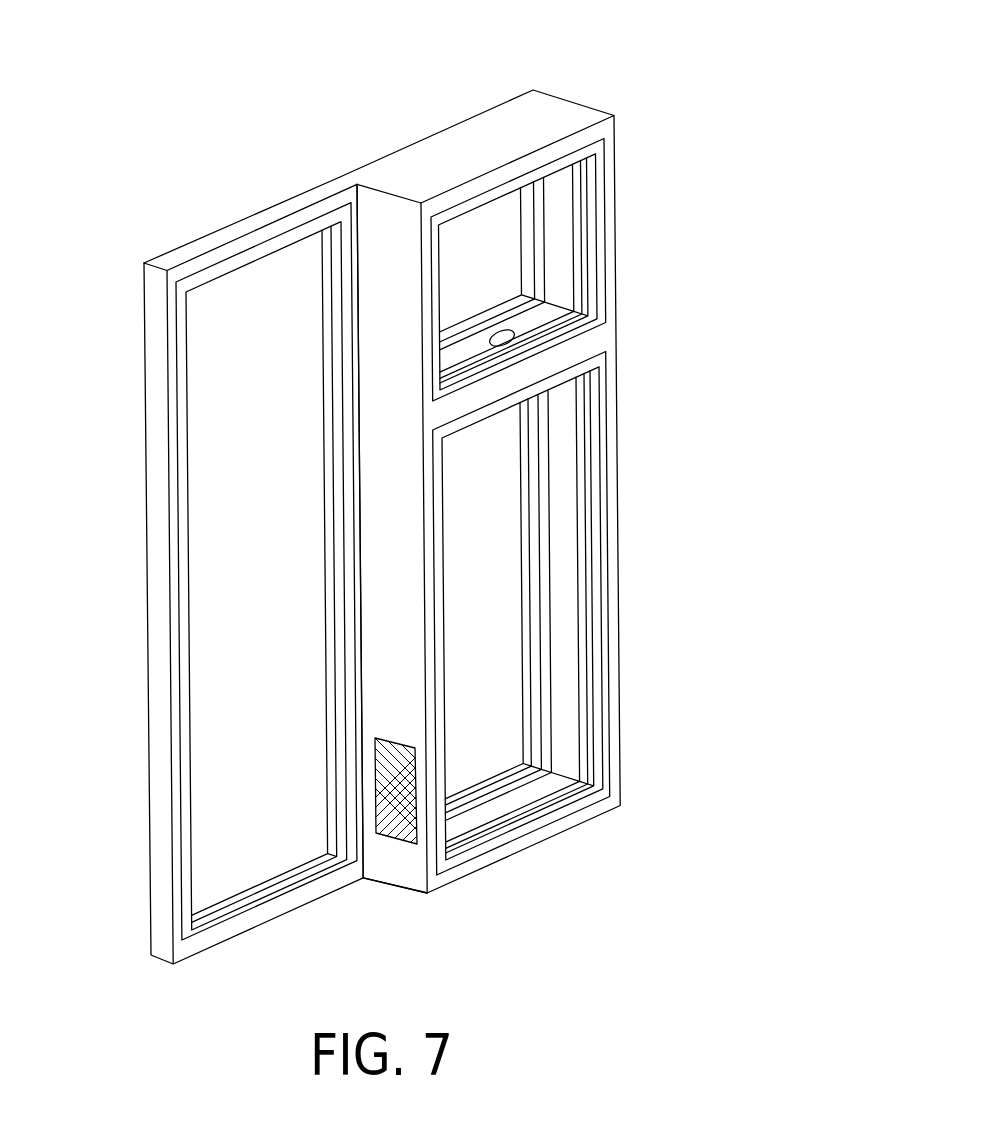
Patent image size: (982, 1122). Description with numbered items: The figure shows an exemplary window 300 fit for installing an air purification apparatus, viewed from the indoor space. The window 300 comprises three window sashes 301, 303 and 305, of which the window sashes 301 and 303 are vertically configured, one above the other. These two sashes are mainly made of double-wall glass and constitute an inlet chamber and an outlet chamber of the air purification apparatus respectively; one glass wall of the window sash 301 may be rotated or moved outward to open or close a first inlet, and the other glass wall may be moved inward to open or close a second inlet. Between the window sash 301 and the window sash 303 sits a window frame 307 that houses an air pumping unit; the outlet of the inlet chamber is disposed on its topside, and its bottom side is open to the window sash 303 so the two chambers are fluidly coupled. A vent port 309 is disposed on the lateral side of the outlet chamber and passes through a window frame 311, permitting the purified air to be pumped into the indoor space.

The window 300 is at (535, 122).
The window sash 301 is at (600, 258).
The window sash 303 is at (587, 593).
The window sash 305 is at (230, 492).
The window frame 307 is at (582, 356).
The vent port 309 is at (395, 802).
The window frame 311 is at (400, 863).